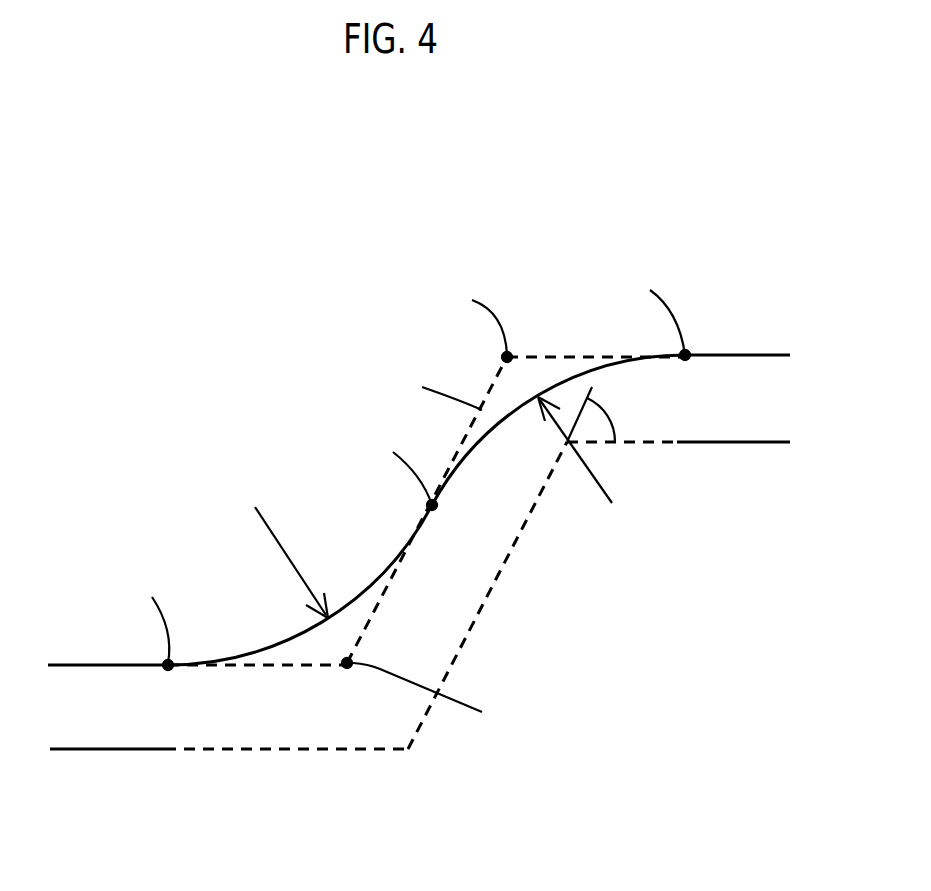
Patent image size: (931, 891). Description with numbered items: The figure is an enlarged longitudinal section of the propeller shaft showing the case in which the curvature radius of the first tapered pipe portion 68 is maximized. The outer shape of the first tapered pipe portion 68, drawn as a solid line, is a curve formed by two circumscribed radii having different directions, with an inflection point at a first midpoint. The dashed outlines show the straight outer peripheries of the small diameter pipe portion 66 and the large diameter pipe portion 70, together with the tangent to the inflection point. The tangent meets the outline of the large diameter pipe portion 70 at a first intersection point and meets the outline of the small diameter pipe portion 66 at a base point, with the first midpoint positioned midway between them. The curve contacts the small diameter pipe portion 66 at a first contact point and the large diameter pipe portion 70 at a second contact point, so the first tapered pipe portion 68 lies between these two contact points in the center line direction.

The small diameter pipe portion 66 is at (80, 630).
The first tapered pipe portion 68 is at (230, 328).
The large diameter pipe portion 70 is at (754, 308).